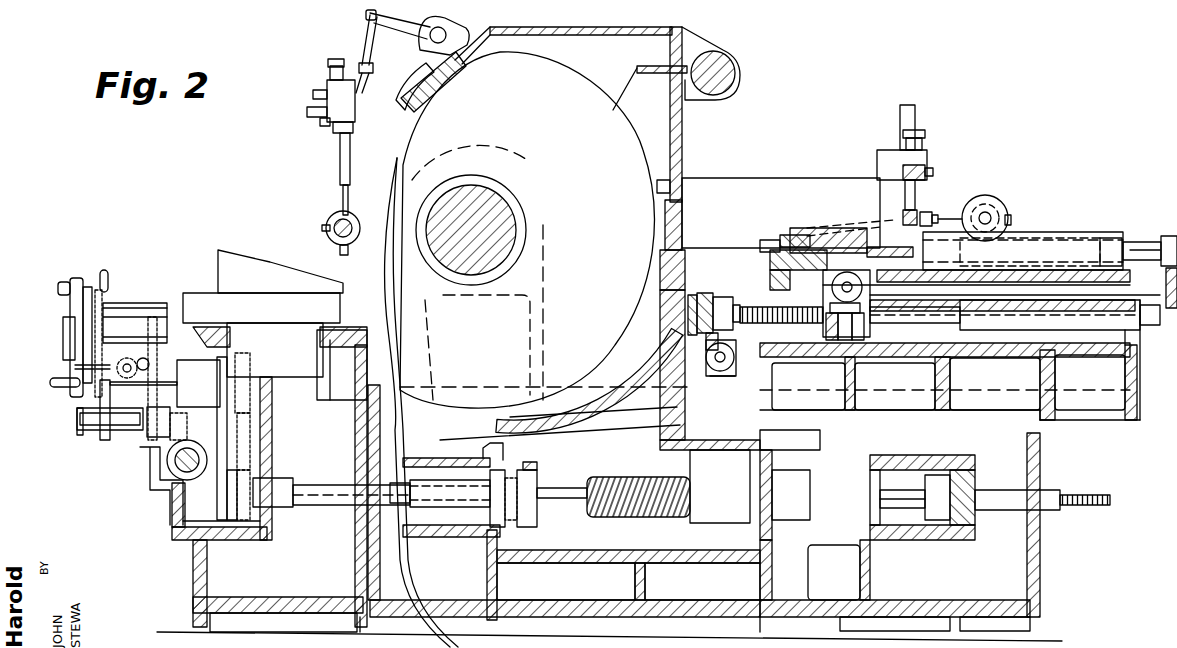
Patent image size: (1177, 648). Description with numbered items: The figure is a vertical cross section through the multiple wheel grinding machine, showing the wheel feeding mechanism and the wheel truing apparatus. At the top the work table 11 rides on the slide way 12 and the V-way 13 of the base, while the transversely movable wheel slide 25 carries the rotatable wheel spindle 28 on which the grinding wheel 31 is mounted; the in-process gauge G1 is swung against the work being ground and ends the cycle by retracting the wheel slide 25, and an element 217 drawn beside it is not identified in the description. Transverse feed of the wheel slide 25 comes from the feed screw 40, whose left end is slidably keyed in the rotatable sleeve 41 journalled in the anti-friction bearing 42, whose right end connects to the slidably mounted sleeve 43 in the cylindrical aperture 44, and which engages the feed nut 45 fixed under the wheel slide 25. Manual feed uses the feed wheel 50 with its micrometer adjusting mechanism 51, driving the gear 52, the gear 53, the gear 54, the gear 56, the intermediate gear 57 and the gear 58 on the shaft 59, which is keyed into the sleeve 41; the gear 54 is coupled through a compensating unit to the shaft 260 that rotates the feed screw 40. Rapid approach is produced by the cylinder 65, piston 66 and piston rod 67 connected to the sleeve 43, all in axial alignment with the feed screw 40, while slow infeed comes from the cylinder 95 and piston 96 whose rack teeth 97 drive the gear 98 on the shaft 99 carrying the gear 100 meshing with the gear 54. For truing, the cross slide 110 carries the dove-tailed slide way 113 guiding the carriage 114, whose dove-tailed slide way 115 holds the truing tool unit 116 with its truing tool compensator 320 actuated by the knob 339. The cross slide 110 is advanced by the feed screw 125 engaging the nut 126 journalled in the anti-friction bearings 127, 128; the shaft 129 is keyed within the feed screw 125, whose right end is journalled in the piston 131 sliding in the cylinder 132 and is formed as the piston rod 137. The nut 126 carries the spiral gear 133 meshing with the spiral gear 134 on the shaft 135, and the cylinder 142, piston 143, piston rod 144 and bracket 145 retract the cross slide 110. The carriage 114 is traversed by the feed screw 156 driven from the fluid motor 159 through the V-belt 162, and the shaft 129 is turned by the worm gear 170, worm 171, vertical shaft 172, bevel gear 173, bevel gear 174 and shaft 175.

The work table 11 is at (260, 300).
The slide way 12 is at (208, 325).
The V-way 13 is at (350, 307).
The wheel slide 25 is at (1050, 410).
The wheel spindle 28 is at (455, 213).
The grinding wheel 31 is at (560, 88).
The feed screw 40 is at (640, 512).
The rotatable sleeve 41 is at (532, 512).
The anti-friction bearing 42 is at (510, 540).
The slidably mounted sleeve 43 is at (840, 515).
The cylindrical aperture 44 is at (699, 581).
The feed nut 45 is at (703, 473).
The feed wheel 50 is at (100, 367).
The micrometer adjusting mechanism 51 is at (63, 275).
The gear 52 is at (95, 307).
The gear 53 is at (157, 306).
The gear 54 is at (160, 372).
The gear 56 is at (250, 358).
The intermediate gear 57 is at (250, 413).
The gear 58 is at (247, 523).
The shaft 59 is at (322, 493).
The cylinder 65 is at (912, 470).
The piston 66 is at (940, 478).
The piston rod 67 is at (905, 510).
The cylinder 95 is at (165, 485).
The piston 96 is at (190, 475).
The rack teeth 97 is at (145, 480).
The gear 98 is at (147, 450).
The shaft 99 is at (100, 440).
The gear 100 is at (80, 454).
The cross slide 110 is at (1055, 268).
The dove-tailed slide way 113 is at (772, 268).
The carriage 114 is at (780, 240).
The dove-tailed slide way 115 is at (765, 248).
The truing tool unit 116 is at (778, 186).
The feed screw 125 is at (784, 330).
The nut 126 is at (870, 320).
The anti-friction bearing 127 is at (832, 337).
The anti-friction bearing 128 is at (862, 337).
The shaft 129 is at (742, 305).
The piston 131 is at (975, 330).
The cylinder 132 is at (1085, 325).
The spiral gear 133 is at (840, 337).
The spiral gear 134 is at (870, 304).
The shaft 135 is at (870, 289).
The piston rod 137 is at (948, 345).
The cylinder 142 is at (1102, 240).
The piston 143 is at (1025, 238).
The piston rod 144 is at (1138, 248).
The bracket 145 is at (1148, 380).
The feed screw 156 is at (835, 240).
The rotary type fluid motor 159 is at (985, 196).
The V-belt 162 is at (950, 218).
The worm gear 170 is at (712, 293).
The worm 171 is at (781, 324).
The vertical shaft 172 is at (708, 340).
The bevel gear 173 is at (736, 358).
The bevel gear 174 is at (700, 378).
The shaft 175 is at (728, 378).
The indicator 217 is at (338, 220).
The shaft 260 is at (228, 368).
The truing tool compensator 320 is at (922, 155).
The actuating knob 339 is at (913, 130).
The in-process gauge G1 is at (348, 110).